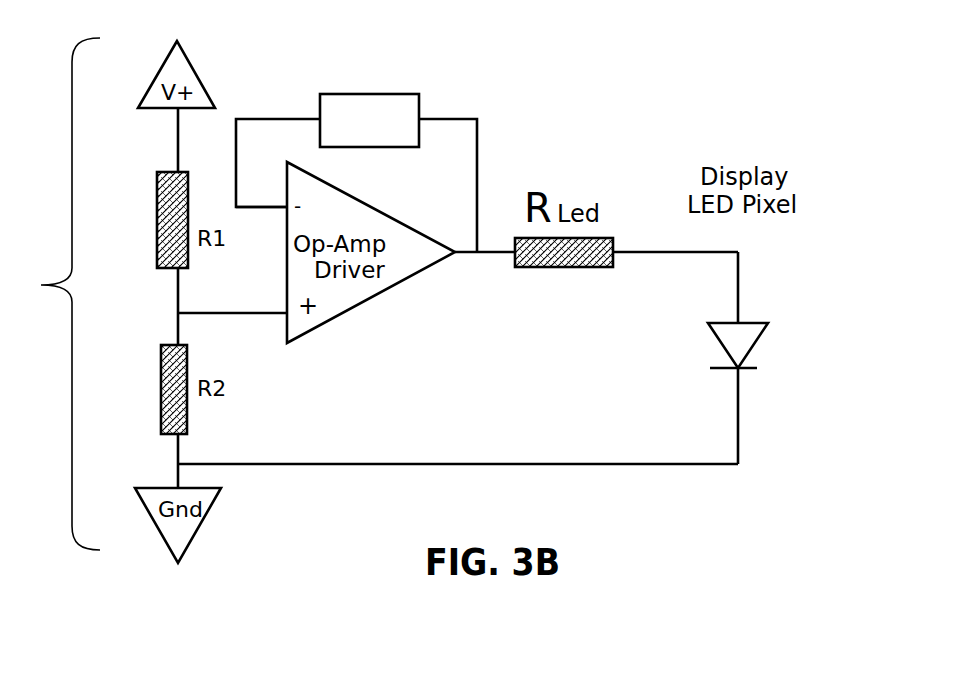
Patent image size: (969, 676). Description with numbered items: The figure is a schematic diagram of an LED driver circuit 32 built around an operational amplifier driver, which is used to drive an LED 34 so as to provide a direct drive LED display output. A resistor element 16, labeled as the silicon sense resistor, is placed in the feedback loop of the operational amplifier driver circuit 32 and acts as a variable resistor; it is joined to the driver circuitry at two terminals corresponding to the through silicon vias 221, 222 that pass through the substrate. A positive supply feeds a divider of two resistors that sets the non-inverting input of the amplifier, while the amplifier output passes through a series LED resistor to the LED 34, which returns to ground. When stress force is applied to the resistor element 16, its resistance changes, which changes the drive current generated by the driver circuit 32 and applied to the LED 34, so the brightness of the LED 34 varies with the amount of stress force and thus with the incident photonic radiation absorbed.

The resistor element 16 is at (386, 94).
The through silicon via 221 is at (302, 119).
The through silicon via 222 is at (455, 119).
The LED driver circuit 32 is at (54, 294).
The LED 34 is at (747, 342).